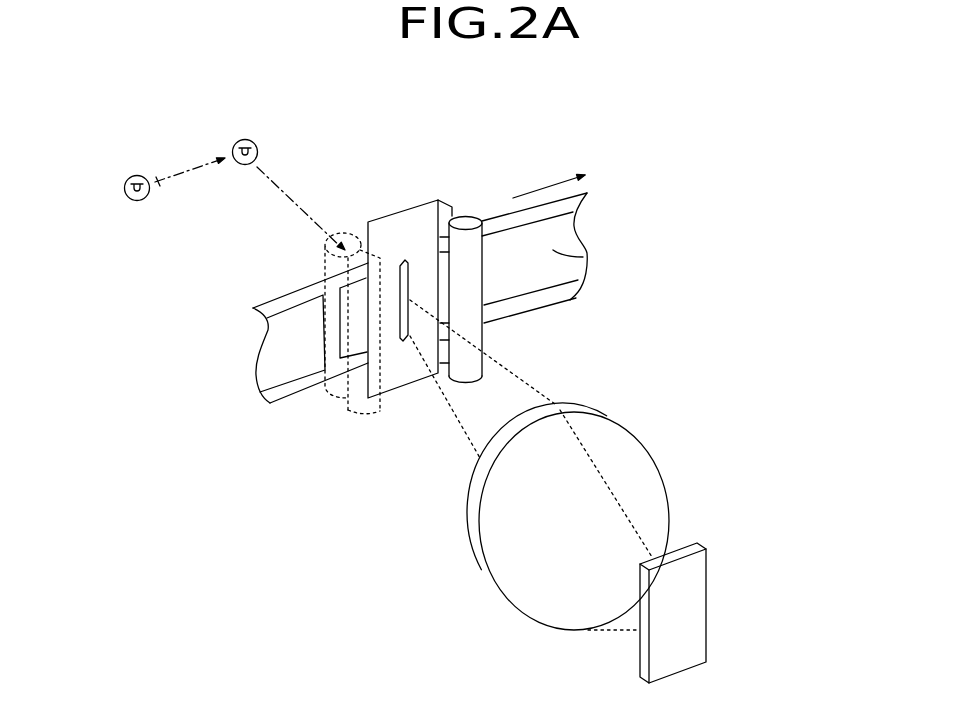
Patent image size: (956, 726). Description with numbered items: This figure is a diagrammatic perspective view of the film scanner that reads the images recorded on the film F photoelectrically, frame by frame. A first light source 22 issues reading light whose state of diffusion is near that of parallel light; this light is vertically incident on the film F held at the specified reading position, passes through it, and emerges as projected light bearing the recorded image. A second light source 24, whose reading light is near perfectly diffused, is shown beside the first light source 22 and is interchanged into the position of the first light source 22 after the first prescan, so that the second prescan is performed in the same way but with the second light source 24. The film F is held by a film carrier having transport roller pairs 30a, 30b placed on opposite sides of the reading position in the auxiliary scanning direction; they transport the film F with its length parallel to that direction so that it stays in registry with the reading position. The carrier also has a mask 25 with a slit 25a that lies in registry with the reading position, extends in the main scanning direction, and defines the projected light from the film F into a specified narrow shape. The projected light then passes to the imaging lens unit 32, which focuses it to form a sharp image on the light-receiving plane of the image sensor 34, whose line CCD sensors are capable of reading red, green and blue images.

The first light source 22 is at (245, 140).
The second light source 24 is at (135, 176).
The mask 25 is at (402, 373).
The slit 25a is at (405, 262).
The transport roller pair 30a is at (345, 410).
The transport roller pair 30b is at (467, 303).
The imaging lens unit 32 is at (620, 447).
The image sensor 34 is at (685, 603).
The film F is at (587, 253).